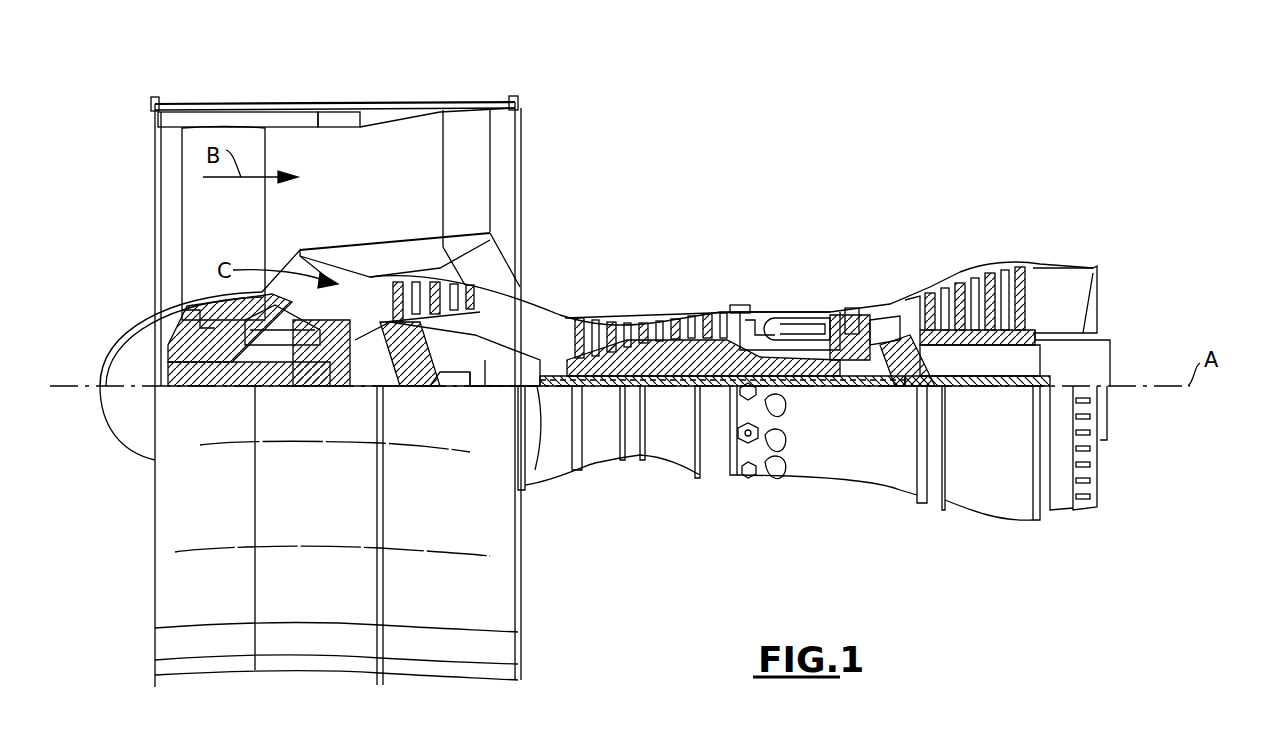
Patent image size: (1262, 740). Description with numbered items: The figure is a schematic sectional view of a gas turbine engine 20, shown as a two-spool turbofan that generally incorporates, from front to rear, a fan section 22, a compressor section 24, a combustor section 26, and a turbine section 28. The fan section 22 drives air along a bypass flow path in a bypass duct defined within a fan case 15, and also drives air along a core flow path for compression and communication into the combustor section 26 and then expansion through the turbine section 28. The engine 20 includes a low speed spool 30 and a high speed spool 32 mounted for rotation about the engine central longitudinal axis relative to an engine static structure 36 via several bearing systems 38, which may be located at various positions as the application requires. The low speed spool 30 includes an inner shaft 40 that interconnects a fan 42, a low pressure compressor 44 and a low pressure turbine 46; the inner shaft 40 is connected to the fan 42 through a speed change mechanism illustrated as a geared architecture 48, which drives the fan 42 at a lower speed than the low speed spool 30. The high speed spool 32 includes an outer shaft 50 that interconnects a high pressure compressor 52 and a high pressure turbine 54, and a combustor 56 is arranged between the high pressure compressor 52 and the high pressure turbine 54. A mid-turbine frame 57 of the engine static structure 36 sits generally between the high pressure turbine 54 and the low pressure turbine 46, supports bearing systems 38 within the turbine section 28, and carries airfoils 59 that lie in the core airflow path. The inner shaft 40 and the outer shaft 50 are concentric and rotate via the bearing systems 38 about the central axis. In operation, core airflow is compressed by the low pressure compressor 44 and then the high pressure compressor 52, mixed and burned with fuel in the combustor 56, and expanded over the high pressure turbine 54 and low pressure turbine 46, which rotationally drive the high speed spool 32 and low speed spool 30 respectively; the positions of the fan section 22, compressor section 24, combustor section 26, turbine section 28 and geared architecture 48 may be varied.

The fan case 15 is at (336, 110).
The gas turbine engine 20 is at (800, 150).
The fan section 22 is at (268, 94).
The compressor section 24 is at (572, 292).
The combustor section 26 is at (790, 283).
The turbine section 28 is at (940, 243).
The low speed spool 30 is at (673, 392).
The high speed spool 32 is at (721, 318).
The engine static structure 36 is at (713, 462).
The bearing systems 38 is at (468, 386).
The inner shaft 40 is at (537, 405).
The fan 42 is at (238, 233).
The low pressure compressor 44 is at (446, 296).
The low pressure turbine 46 is at (982, 282).
The geared architecture 48 is at (340, 386).
The outer shaft 50 is at (805, 372).
The high pressure compressor 52 is at (645, 318).
The high pressure turbine 54 is at (850, 318).
The combustor 56 is at (790, 330).
The mid-turbine frame 57 is at (902, 300).
The airfoils 59 is at (925, 345).